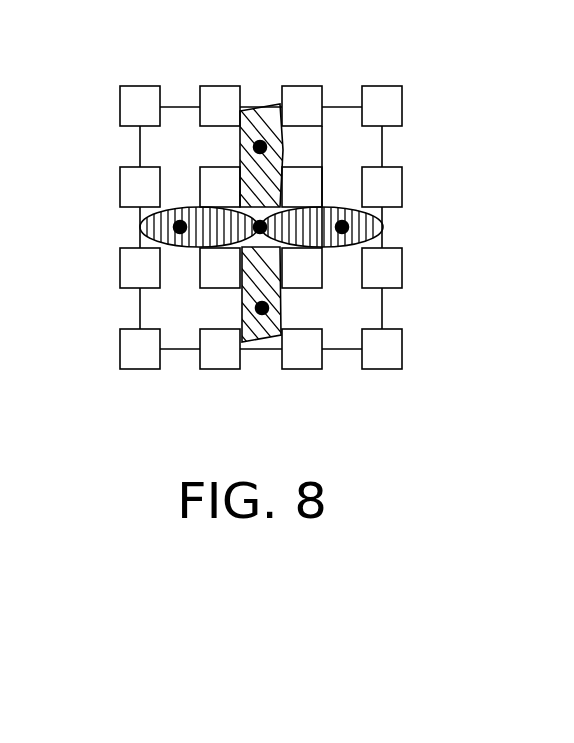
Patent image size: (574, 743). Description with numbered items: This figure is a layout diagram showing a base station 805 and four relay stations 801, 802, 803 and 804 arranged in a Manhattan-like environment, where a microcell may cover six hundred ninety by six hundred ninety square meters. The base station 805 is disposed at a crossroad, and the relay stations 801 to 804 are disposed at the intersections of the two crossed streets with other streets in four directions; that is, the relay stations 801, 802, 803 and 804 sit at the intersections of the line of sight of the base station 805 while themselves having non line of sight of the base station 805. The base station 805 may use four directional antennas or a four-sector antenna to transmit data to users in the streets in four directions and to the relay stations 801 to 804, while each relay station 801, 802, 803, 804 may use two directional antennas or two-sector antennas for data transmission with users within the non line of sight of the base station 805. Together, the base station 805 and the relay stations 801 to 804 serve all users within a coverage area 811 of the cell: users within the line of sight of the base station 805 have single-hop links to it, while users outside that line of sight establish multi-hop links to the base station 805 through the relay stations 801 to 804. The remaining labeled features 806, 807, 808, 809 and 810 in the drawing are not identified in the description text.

The relay station 801 is at (260, 222).
The relay station 802 is at (345, 227).
The relay station 803 is at (262, 312).
The relay station 804 is at (176, 227).
The base station 805 is at (246, 176).
The upper node 806 is at (283, 148).
The lower vertical hatched region 807 is at (282, 310).
The right elliptical region 808 is at (338, 247).
The left elliptical region 809 is at (185, 247).
The cell block 810 is at (140, 90).
The coverage area 811 is at (340, 105).